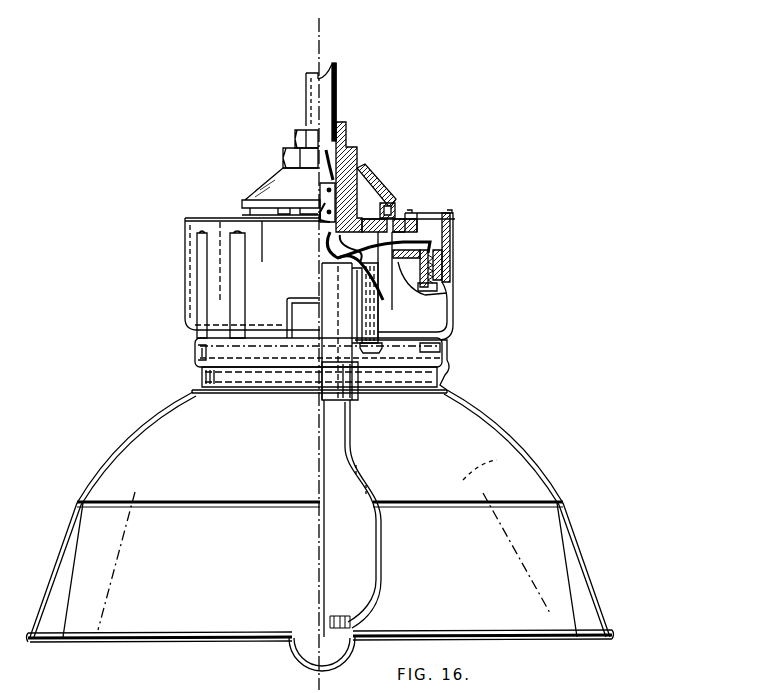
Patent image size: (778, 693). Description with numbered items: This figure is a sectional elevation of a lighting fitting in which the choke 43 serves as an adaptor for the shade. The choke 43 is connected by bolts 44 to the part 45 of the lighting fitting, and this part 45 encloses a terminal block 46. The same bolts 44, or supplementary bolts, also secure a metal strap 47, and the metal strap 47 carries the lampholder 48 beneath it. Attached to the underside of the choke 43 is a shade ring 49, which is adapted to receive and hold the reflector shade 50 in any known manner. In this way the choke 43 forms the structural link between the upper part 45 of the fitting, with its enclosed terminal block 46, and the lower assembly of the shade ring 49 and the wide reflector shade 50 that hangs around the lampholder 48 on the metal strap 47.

The choke 43 is at (446, 276).
The bolts 44 is at (372, 352).
The part of the lighting fitting 45 is at (357, 205).
The terminal block 46 is at (333, 196).
The metal strap 47 is at (360, 323).
The lampholder 48 is at (323, 391).
The shade ring 49 is at (446, 360).
The reflector shade 50 is at (495, 423).